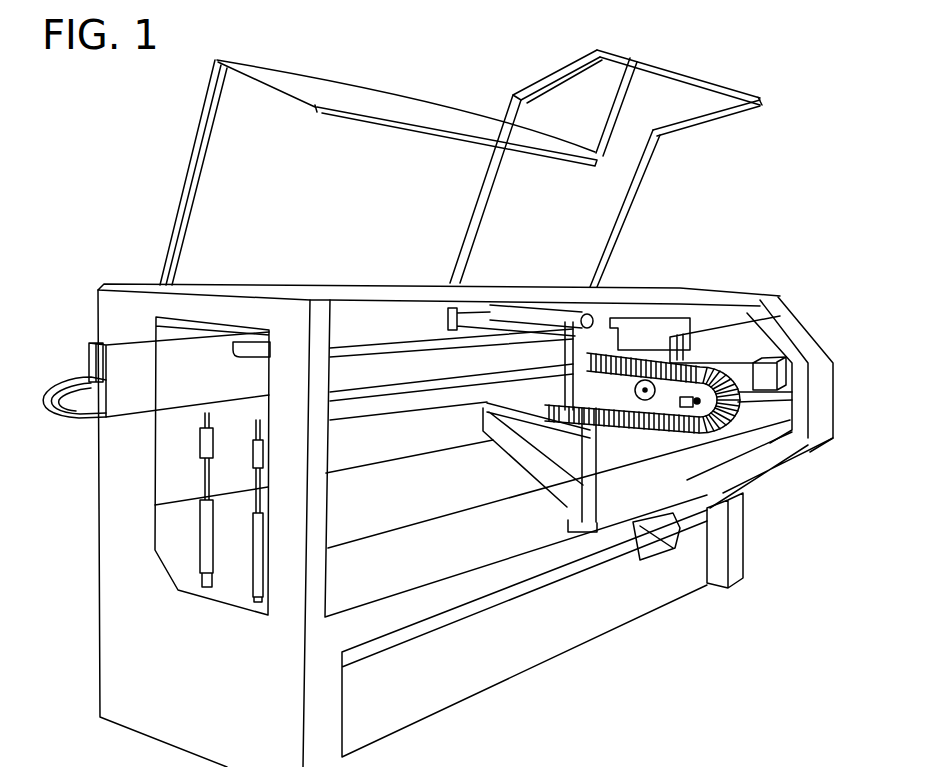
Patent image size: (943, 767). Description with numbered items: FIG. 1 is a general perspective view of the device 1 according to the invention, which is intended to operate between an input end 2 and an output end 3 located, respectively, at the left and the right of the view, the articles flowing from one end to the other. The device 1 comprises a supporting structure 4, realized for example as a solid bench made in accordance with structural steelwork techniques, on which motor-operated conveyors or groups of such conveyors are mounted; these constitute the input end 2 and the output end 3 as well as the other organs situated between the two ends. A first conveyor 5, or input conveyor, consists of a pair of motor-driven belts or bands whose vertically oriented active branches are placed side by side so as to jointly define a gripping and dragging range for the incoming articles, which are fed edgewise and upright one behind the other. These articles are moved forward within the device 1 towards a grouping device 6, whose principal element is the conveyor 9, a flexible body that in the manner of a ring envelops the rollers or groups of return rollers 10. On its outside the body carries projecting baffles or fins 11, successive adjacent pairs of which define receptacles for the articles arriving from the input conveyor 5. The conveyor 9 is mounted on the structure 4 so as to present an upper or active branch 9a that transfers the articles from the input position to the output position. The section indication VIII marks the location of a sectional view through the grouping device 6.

The device 1 is at (730, 197).
The input end 2 is at (800, 302).
The output end 3 is at (82, 437).
The supporting structure 4 is at (158, 663).
The first conveyor 5 is at (727, 348).
The grouping device 6 is at (660, 462).
The conveyor 9 is at (613, 444).
The upper or active branch 9a is at (598, 340).
The return rollers 10 is at (653, 398).
The fins 11 is at (660, 435).
The section VIII indicator VIII is at (648, 338).